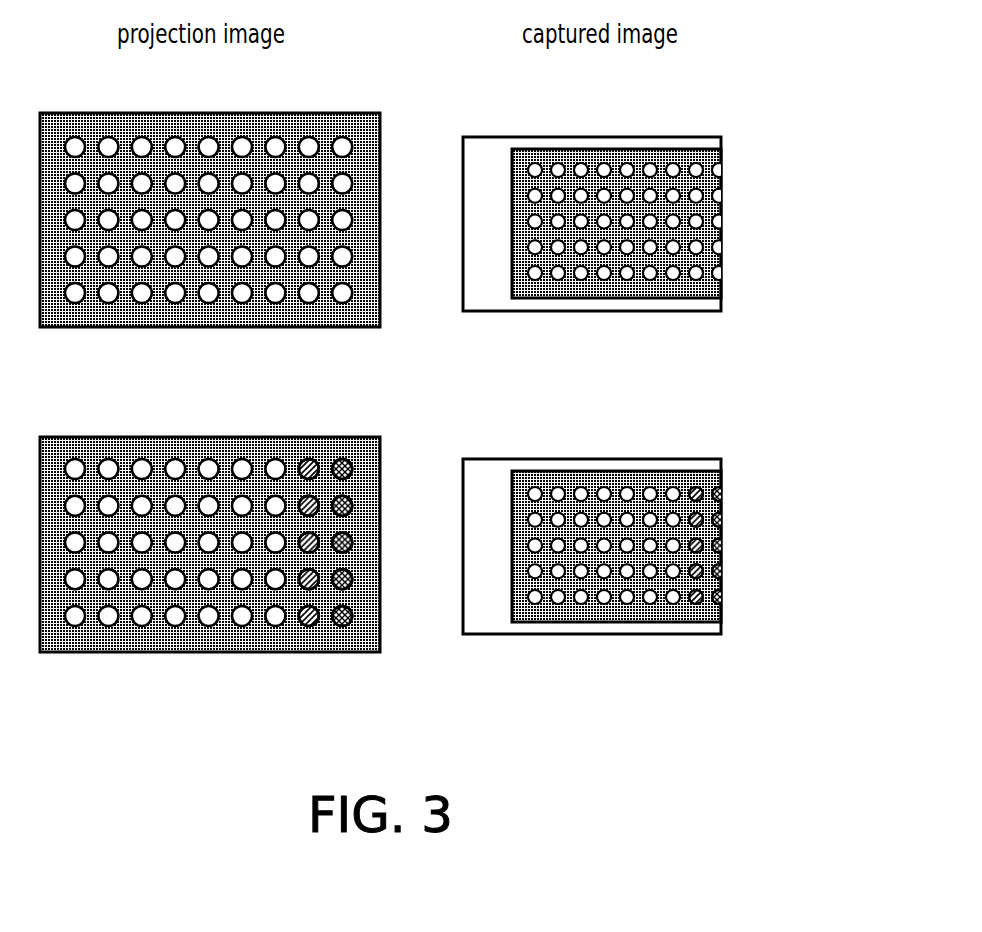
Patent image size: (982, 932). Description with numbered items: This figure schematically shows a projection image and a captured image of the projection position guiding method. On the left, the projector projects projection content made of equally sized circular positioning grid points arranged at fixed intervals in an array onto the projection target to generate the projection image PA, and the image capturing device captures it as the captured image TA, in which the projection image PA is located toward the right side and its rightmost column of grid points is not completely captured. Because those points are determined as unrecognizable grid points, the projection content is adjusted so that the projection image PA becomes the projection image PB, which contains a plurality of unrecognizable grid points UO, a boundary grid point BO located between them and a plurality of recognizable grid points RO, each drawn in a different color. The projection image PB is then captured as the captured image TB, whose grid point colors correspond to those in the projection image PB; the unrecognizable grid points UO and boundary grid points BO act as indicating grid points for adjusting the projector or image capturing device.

The projection image PA is at (210, 113).
The projection image PB is at (397, 567).
The captured image TA is at (592, 137).
The captured image TB is at (592, 459).
The recognizable grid point RO is at (283, 637).
The boundary grid point BO is at (316, 637).
The unrecognizable grid point UO is at (350, 637).